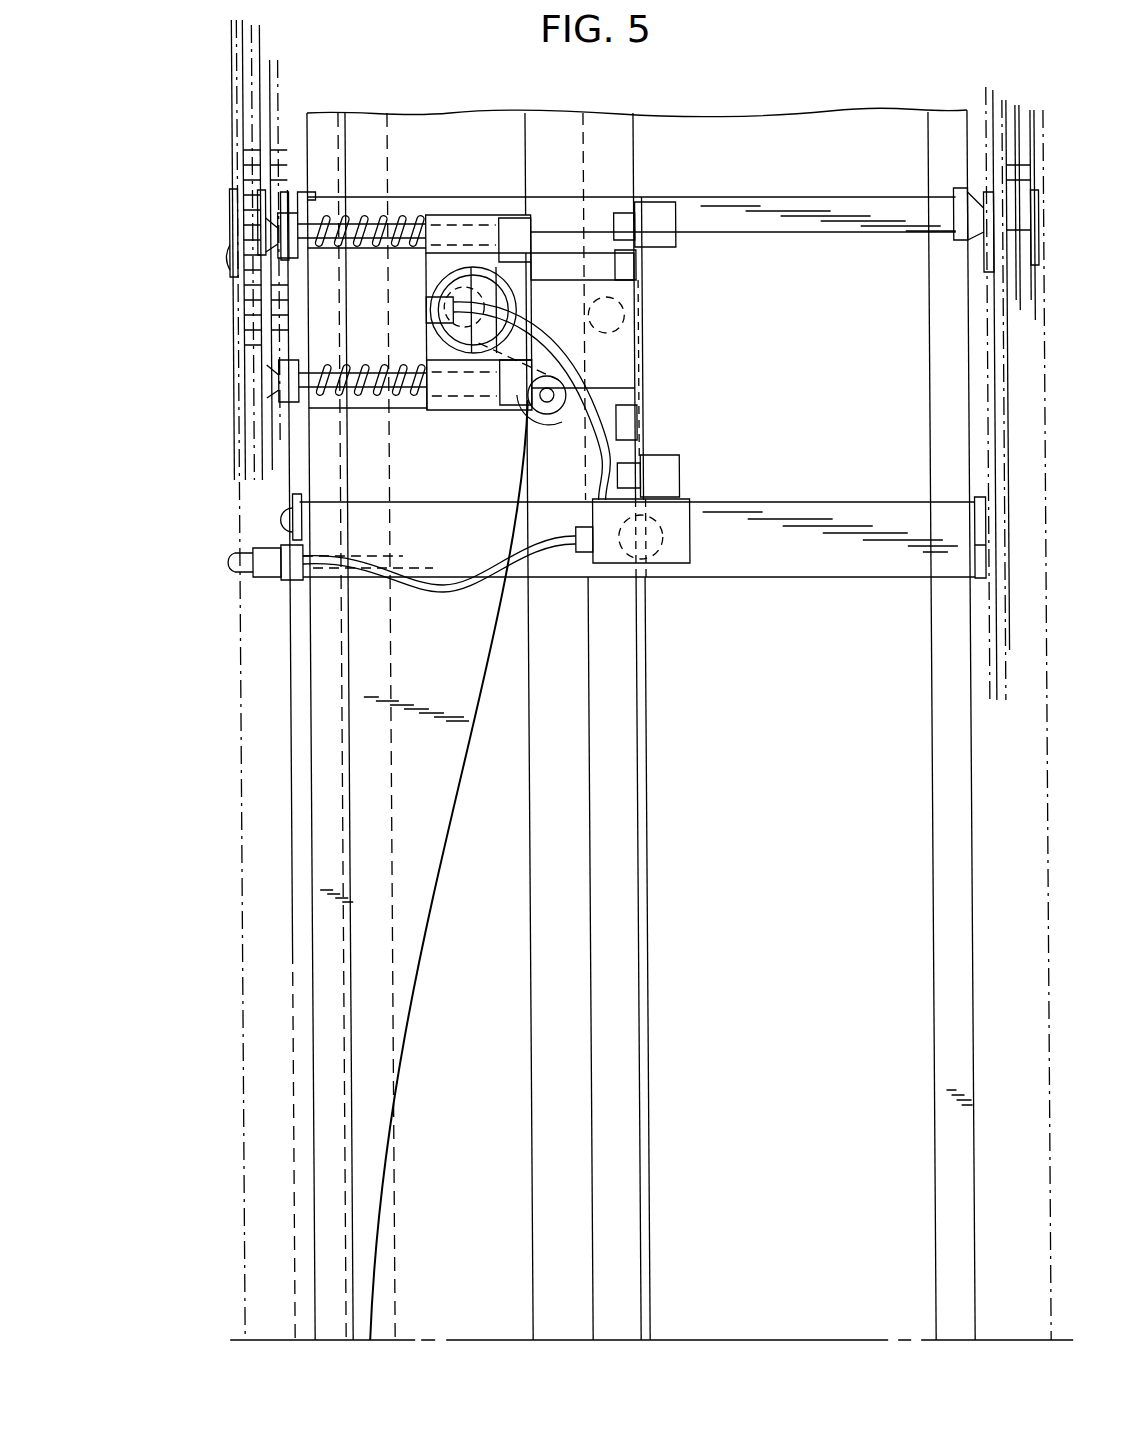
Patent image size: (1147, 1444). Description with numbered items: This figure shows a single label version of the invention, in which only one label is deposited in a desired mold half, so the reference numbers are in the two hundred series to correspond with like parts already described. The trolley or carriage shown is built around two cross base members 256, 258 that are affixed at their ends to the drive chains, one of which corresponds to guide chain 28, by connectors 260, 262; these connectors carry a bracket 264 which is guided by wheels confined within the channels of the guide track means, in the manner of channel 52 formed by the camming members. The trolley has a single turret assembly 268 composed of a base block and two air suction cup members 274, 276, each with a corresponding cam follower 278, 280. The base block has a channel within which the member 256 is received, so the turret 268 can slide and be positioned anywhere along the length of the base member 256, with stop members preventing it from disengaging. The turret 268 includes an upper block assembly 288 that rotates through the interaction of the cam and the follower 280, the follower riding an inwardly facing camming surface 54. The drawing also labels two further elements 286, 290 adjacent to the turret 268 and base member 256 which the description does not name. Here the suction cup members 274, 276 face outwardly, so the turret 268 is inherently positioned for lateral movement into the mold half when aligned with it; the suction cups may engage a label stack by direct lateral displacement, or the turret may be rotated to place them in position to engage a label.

The guide chain 28 is at (248, 216).
The channel 52 is at (610, 374).
The inwardly facing camming surface 54 is at (440, 818).
The cross base member 256 is at (752, 212).
The cross base member 258 is at (775, 507).
The connector 260 is at (232, 232).
The connector 262 is at (278, 522).
The bracket 264 is at (298, 195).
The turret assembly 268 is at (474, 214).
The air suction cup member 274 is at (272, 250).
The air suction cup member 276 is at (262, 392).
The cam follower 278 is at (622, 316).
The cam follower 280 is at (545, 408).
The upper lead screw 286 is at (370, 212).
The upper block assembly 288 is at (474, 406).
The screw thread 290 is at (404, 222).